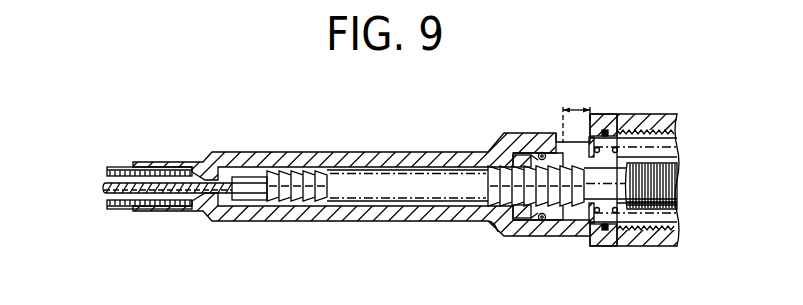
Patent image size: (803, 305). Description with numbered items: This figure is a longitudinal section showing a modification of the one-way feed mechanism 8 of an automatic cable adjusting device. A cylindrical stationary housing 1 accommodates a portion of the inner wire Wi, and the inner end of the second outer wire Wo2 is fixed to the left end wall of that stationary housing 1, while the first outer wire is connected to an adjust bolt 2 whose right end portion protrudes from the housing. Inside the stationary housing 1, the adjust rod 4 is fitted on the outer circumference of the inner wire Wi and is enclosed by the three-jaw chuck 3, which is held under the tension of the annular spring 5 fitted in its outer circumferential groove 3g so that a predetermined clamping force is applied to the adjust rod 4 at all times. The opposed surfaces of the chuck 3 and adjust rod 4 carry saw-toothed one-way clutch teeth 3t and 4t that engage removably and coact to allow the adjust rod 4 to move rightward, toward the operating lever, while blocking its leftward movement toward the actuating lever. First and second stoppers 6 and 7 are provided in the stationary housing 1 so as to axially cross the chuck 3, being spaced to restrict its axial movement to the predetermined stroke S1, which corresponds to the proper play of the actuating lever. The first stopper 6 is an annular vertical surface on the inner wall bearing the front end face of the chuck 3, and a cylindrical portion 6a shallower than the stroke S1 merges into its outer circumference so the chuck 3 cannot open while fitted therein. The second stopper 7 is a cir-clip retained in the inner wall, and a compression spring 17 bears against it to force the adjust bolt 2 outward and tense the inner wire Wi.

The stationary housing 1 is at (631, 124).
The adjust bolt 2 is at (621, 243).
The three-jaw chuck 3 is at (557, 205).
The one-way clutch teeth 3t is at (534, 220).
The outer circumferential groove 3g is at (556, 212).
The adjust rod 4 is at (248, 183).
The one-way clutch teeth 4t is at (489, 240).
The annular spring 5 is at (542, 152).
The first stopper 6 is at (513, 158).
The cylindrical portion 6a is at (523, 154).
The second stopper 7 is at (556, 156).
The one-way feed mechanism 8 is at (476, 262).
The compression spring 17 is at (616, 130).
The predetermined stroke S1 is at (576, 112).
The second outer wire Wo2 is at (121, 160).
The inner wire Wi is at (104, 191).